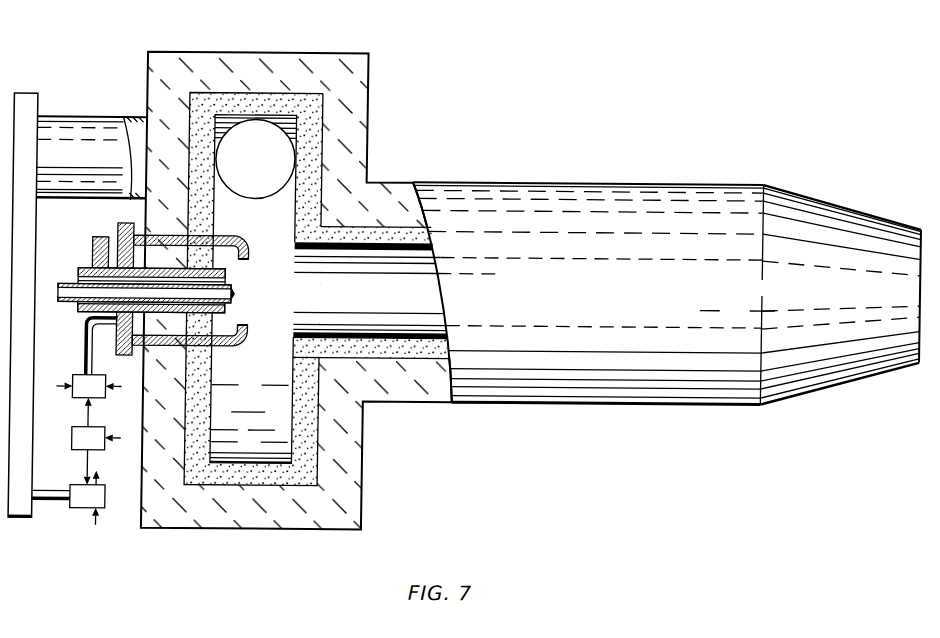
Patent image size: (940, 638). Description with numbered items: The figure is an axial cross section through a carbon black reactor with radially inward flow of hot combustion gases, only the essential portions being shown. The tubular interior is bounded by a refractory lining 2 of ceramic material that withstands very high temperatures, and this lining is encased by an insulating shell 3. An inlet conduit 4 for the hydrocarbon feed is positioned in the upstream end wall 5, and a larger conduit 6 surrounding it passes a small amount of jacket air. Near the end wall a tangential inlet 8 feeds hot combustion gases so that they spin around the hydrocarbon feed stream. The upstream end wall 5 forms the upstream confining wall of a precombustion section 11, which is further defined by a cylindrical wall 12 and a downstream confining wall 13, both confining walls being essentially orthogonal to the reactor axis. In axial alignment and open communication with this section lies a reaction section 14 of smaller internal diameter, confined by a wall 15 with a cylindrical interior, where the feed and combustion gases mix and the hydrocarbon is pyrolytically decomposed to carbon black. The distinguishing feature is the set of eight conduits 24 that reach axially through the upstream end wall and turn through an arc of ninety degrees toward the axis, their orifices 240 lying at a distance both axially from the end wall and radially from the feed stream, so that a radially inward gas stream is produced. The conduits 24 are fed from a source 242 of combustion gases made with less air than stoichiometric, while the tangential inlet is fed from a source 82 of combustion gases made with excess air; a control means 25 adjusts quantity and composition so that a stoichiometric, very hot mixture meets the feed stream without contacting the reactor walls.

The refractory lining 2 is at (208, 212).
The insulating shell 3 is at (406, 388).
The inlet conduit 4 is at (232, 287).
The upstream end wall 5 is at (213, 395).
The larger conduit 6 is at (223, 269).
The tangential inlet 8 is at (265, 189).
The precombustion section 11 is at (266, 301).
The cylindrical wall 12 is at (238, 462).
The downstream confining wall 13 is at (293, 401).
The reaction section 14 is at (375, 298).
The wall 15 is at (390, 333).
The conduits 24 is at (248, 238).
The orifices 240 is at (248, 258).
The source of combustion gases 242 is at (89, 368).
The control means 25 is at (96, 452).
The source of combustion gases 82 is at (68, 504).